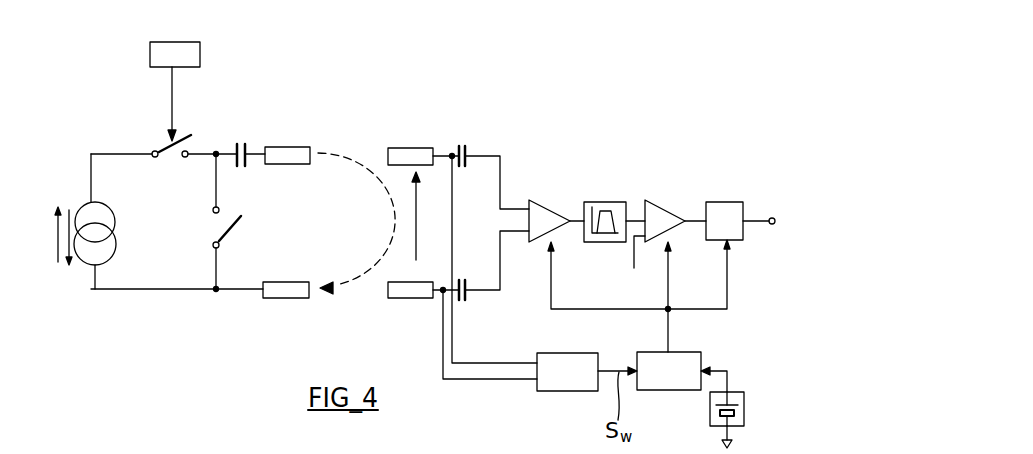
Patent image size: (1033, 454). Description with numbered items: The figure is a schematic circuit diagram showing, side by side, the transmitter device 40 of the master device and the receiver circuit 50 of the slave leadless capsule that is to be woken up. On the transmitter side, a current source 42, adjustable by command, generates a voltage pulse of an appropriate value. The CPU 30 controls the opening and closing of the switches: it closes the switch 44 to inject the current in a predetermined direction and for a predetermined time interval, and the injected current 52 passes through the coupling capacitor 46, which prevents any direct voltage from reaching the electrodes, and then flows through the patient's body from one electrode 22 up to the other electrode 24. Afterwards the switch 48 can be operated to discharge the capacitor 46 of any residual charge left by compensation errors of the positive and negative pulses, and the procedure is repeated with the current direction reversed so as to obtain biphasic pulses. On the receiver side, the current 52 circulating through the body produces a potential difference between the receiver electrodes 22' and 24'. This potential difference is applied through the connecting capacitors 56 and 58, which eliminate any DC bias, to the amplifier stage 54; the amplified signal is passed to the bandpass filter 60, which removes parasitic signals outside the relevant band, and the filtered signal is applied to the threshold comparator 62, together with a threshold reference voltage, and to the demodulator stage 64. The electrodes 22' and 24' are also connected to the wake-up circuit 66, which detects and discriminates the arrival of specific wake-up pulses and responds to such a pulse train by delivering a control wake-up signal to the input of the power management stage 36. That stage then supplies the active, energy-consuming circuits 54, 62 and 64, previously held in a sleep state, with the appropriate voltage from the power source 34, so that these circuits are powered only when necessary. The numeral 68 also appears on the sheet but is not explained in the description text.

The transmitter device 40 is at (106, 84).
The CPU 30 is at (200, 50).
The current source 42 is at (88, 210).
The switch 44 is at (173, 148).
The coupling capacitor 46 is at (238, 145).
The electrode 22 is at (287, 123).
The electrode 24 is at (286, 322).
The switch 48 is at (232, 230).
The injected current 52 is at (352, 162).
The receiver electrode 22' is at (423, 115).
The receiver electrode 24' is at (408, 317).
The connecting capacitor 56 is at (468, 146).
The connecting capacitor 58 is at (470, 296).
The receiver circuit 50 is at (570, 122).
The amplifier stage 54 is at (543, 217).
The bandpass filter 60 is at (605, 207).
The threshold comparator 62 is at (661, 208).
The demodulator stage 64 is at (727, 202).
The wake-up circuit 66 is at (572, 391).
The power management stage 36 is at (672, 385).
The power source 34 is at (745, 407).
The sensor system 68 is at (236, 444).